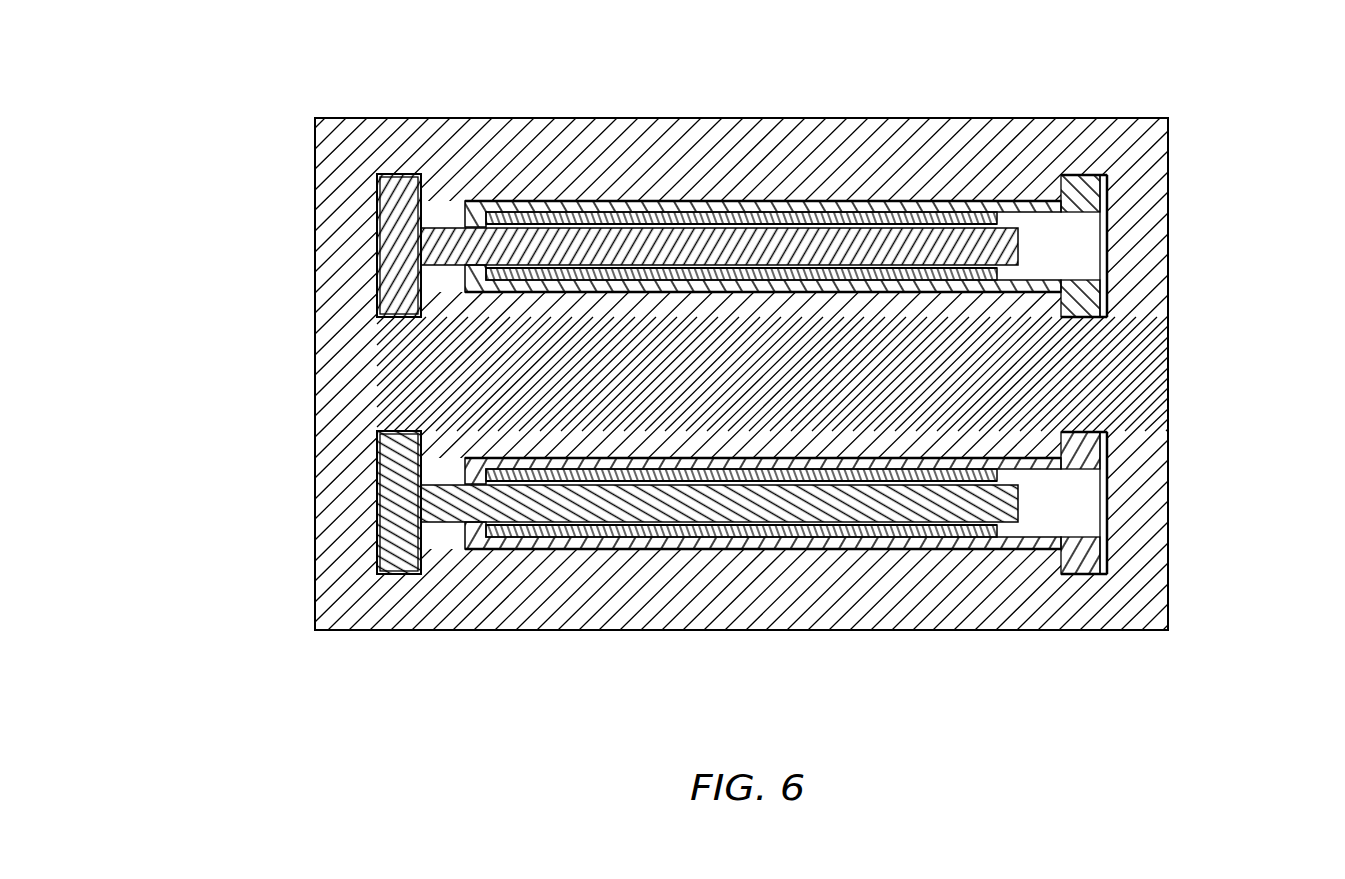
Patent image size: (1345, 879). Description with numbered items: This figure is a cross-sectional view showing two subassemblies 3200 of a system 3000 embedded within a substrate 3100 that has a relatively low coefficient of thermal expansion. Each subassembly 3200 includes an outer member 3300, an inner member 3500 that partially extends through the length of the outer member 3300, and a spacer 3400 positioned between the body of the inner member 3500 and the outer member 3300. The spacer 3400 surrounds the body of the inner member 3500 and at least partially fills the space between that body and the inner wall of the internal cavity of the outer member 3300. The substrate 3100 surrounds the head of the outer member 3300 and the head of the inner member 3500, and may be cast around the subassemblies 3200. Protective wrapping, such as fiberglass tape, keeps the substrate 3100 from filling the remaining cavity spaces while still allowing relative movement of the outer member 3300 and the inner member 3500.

The system 3000 is at (718, 371).
The substrate 3100 is at (670, 118).
The subassembly 3200 is at (673, 371).
The outer member 3300 is at (1075, 278).
The spacer 3400 is at (555, 210).
The inner member 3500 is at (423, 207).